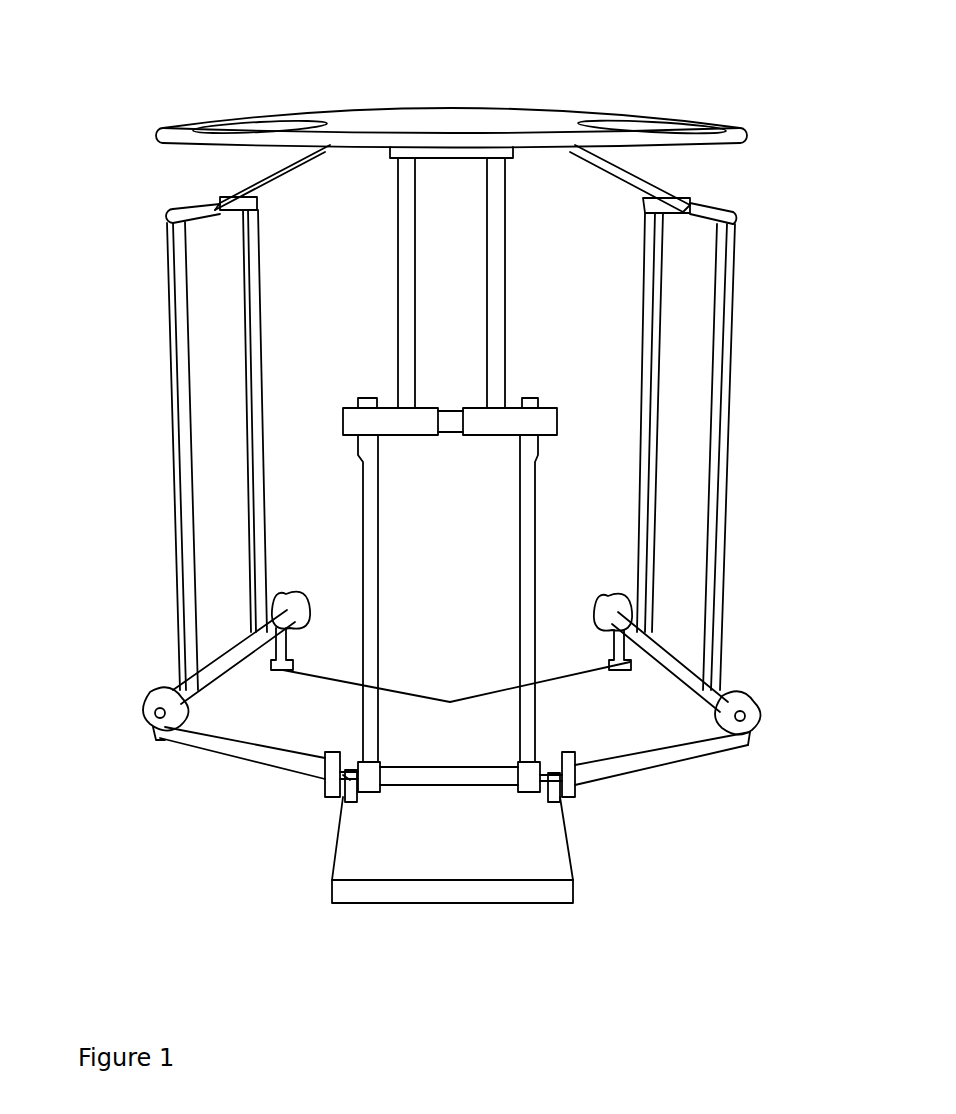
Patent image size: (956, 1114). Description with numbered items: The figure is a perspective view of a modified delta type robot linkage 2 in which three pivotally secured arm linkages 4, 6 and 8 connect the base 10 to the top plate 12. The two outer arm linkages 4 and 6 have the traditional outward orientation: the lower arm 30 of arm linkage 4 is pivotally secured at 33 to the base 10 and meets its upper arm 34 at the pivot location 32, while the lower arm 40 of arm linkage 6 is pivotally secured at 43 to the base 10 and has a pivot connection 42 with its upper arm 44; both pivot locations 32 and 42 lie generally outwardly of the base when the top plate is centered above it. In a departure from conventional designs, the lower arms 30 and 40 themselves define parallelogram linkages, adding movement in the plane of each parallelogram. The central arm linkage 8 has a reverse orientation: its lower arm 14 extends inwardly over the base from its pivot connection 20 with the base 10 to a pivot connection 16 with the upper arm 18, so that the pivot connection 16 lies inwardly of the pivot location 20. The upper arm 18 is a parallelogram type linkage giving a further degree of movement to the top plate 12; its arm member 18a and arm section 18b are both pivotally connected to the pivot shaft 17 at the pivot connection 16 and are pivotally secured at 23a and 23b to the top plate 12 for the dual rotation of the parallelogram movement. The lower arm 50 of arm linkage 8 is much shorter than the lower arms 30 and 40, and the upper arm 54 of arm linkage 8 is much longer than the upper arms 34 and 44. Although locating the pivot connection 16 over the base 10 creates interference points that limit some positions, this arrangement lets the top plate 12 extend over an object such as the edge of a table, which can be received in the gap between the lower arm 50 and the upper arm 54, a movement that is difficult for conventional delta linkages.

The modified delta type robot linkage 2 is at (148, 97).
The top plate 12 is at (400, 112).
The pivot location of arm member 18a 23a is at (407, 152).
The pivot location of arm section 18b 23b is at (503, 150).
The upper arm 34 is at (255, 187).
The upper arm 44 is at (627, 178).
The pivot location 32 is at (168, 215).
The pivot connection 42 is at (738, 217).
The upper arm 54 is at (395, 293).
The upper arm 18 is at (498, 283).
The arm member 18a is at (413, 355).
The arm section 18b is at (500, 355).
The arm linkage 8 is at (473, 283).
The lower arm 30 is at (270, 448).
The lower arm 40 is at (735, 435).
The pivot connection 16 is at (480, 451).
The pivot shaft 17 is at (428, 430).
The arm linkage 4 is at (212, 457).
The arm linkage 6 is at (695, 462).
The lower arm 14 is at (378, 592).
The lower arm 50 is at (545, 580).
The pivot 43 is at (752, 712).
The pivot 33 is at (165, 737).
The base 10 is at (685, 752).
The pivot connection 20 is at (340, 785).